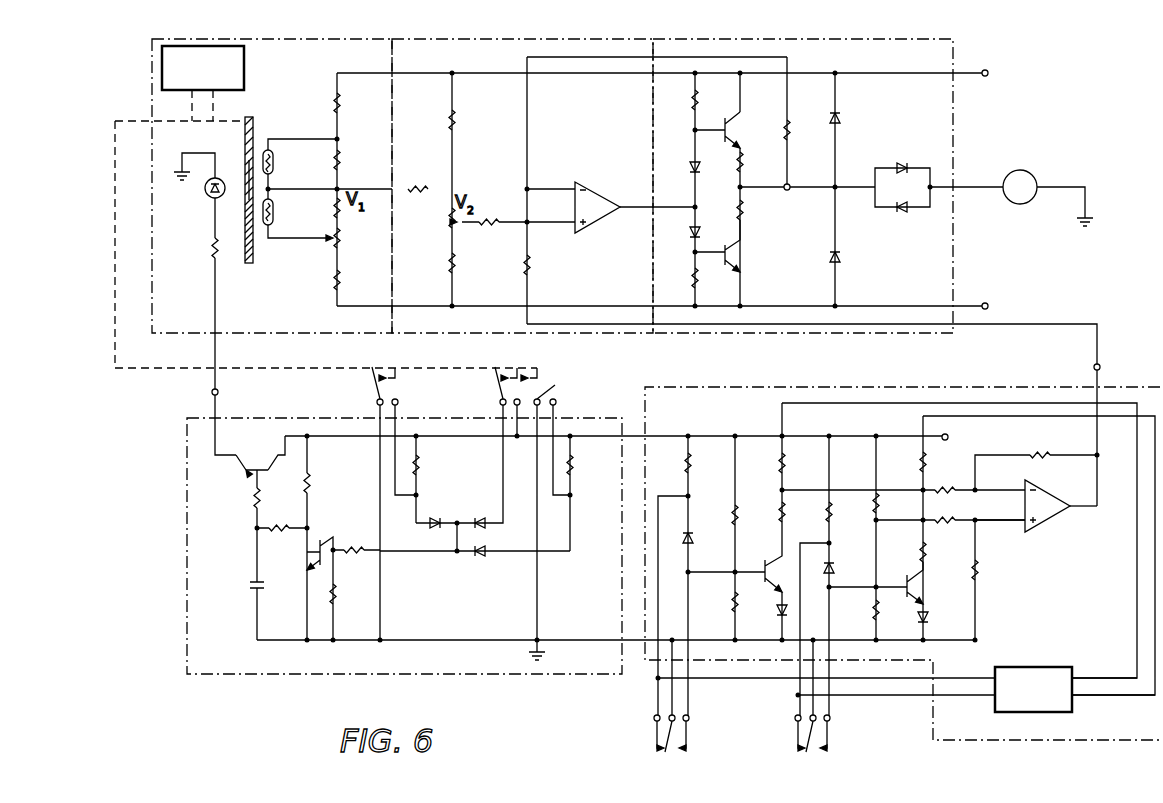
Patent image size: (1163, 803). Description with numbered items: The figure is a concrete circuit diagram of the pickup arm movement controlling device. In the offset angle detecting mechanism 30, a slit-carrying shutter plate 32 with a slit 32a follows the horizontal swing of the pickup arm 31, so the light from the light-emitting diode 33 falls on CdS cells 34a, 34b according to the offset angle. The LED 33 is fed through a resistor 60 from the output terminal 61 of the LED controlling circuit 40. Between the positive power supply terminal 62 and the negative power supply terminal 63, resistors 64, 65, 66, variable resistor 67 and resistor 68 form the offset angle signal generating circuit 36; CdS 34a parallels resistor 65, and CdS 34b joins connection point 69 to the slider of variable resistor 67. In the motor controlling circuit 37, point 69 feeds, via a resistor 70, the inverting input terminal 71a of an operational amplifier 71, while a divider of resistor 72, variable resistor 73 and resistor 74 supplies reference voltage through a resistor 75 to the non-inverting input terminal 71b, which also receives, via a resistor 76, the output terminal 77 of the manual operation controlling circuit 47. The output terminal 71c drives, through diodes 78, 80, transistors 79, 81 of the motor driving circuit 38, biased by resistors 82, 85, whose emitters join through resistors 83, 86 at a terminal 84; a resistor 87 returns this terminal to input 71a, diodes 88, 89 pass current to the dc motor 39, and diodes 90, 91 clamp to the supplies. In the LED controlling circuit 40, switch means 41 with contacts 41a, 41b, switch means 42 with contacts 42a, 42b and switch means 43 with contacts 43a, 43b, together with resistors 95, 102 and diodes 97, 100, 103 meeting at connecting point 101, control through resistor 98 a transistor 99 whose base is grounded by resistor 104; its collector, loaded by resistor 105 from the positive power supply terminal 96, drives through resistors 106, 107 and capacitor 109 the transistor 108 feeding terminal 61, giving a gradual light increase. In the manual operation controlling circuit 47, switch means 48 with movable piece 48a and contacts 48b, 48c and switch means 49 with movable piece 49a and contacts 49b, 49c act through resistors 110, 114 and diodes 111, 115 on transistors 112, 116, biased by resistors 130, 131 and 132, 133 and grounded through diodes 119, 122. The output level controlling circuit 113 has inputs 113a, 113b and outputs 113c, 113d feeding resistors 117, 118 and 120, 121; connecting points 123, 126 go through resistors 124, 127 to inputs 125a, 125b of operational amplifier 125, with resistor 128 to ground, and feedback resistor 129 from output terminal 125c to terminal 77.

The offset angle detecting mechanism 30 is at (260, 39).
The pickup arm 31 is at (244, 63).
The slit-carrying shutter plate 32 is at (252, 120).
The slit 32a is at (245, 175).
The light-emitting diode 33 is at (206, 191).
The CdS photo-conductive cell 34a is at (296, 154).
The CdS photo-conductive cell 34b is at (268, 225).
The offset angle signal generating circuit 36 is at (333, 83).
The motor controlling circuit 37 is at (512, 39).
The motor driving circuit 38 is at (792, 39).
The dc motor 39 is at (1010, 174).
The LED controlling circuit 40 is at (294, 418).
The switch means 41 is at (400, 394).
The contact point 41a is at (398, 405).
The contact point 41b is at (377, 403).
The switch means 42 is at (495, 392).
The contact point 42a is at (518, 398).
The contact point 42b is at (500, 405).
The switch means 43 is at (560, 388).
The contact point 43a is at (557, 403).
The contact point 43b is at (540, 398).
The manual operation controlling circuit 47 is at (958, 378).
The switch means 48 is at (645, 728).
The movable contact piece 48a is at (670, 715).
The contact point 48b is at (654, 716).
The contact point 48c is at (689, 715).
The switch means 49 is at (835, 728).
The movable contact piece 49a is at (811, 715).
The contact point 49b is at (795, 718).
The contact point 49c is at (830, 716).
The resistor 60 is at (211, 248).
The output terminal 61 is at (219, 392).
The positive power supply terminal 62 is at (985, 70).
The negative power supply terminal 63 is at (985, 303).
The resistor 64 is at (333, 103).
The resistor 65 is at (340, 157).
The resistor 66 is at (333, 210).
The variable resistor 67 is at (341, 238).
The resistor 68 is at (341, 280).
The connection point 69 is at (334, 189).
The resistor 70 is at (424, 186).
The operational amplifier 71 is at (590, 184).
The inverting input terminal 71a is at (532, 189).
The non-inverting input terminal 71b is at (532, 222).
The output terminal 71c is at (633, 207).
The resistor 72 is at (456, 120).
The variable resistor 73 is at (448, 218).
The resistor 74 is at (448, 263).
The resistor 75 is at (489, 226).
The resistor 76 is at (531, 265).
The output terminal 77 is at (1100, 367).
The diode 78 is at (701, 167).
The transistor 79 is at (736, 125).
The diode 80 is at (703, 225).
The transistor 81 is at (738, 258).
The resistor 82 is at (699, 100).
The resistor 83 is at (744, 162).
The terminal 84 is at (790, 184).
The resistor 85 is at (691, 278).
The resistor 86 is at (744, 212).
The resistor 87 is at (791, 130).
The diode 88 is at (902, 164).
The diode 89 is at (902, 213).
The diode 90 is at (845, 112).
The diode 91 is at (840, 257).
The resistor 95 is at (420, 465).
The positive power supply terminal 96 is at (945, 440).
The diode 97 is at (435, 517).
The resistor 98 is at (354, 554).
The transistor 99 is at (321, 540).
The diode 100 is at (480, 517).
The connecting point 101 is at (457, 556).
The resistor 102 is at (574, 466).
The diode 103 is at (481, 557).
The resistor 104 is at (337, 594).
The resistor 105 is at (312, 484).
The resistor 106 is at (270, 532).
The resistor 107 is at (253, 498).
The transistor 108 is at (252, 462).
The capacitor 109 is at (250, 585).
The resistor 110 is at (684, 463).
The diode 111 is at (694, 538).
The transistor 112 is at (780, 557).
The output level controlling circuit 113 is at (1022, 667).
The input terminal 113a is at (945, 676).
The input terminal 113b is at (945, 697).
The output terminal 113c is at (1087, 676).
The output terminal 113d is at (1087, 697).
The resistor 114 is at (826, 512).
The diode 115 is at (834, 568).
The transistor 116 is at (920, 584).
The resistor 117 is at (778, 512).
The resistor 118 is at (778, 463).
The diode 119 is at (778, 610).
The resistor 120 is at (919, 552).
The resistor 121 is at (919, 462).
The diode 122 is at (928, 617).
The connecting point 123 is at (785, 490).
The resistor 124 is at (936, 490).
The operational amplifier 125 is at (1042, 500).
The inverting input terminal 125a is at (1000, 490).
The non-inverting input terminal 125b is at (1000, 522).
The output terminal 125c is at (1083, 508).
The connecting point 126 is at (918, 520).
The resistor 127 is at (936, 520).
The resistor 128 is at (971, 570).
The resistor 129 is at (1040, 452).
The resistor 130 is at (731, 515).
The resistor 131 is at (731, 602).
The resistor 132 is at (873, 506).
The resistor 133 is at (872, 610).